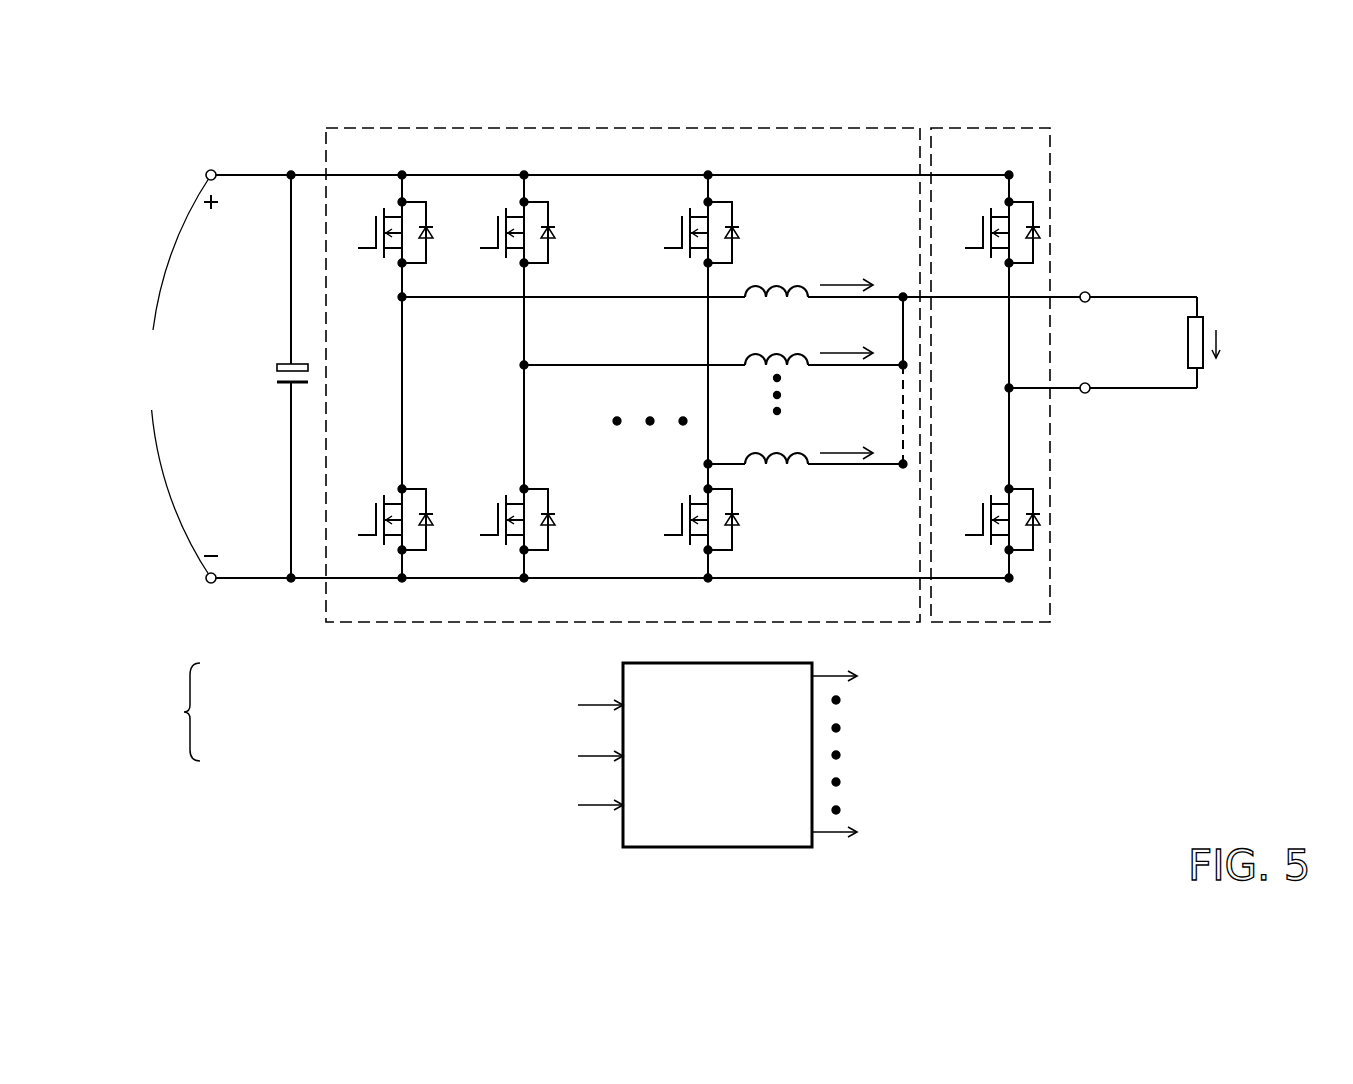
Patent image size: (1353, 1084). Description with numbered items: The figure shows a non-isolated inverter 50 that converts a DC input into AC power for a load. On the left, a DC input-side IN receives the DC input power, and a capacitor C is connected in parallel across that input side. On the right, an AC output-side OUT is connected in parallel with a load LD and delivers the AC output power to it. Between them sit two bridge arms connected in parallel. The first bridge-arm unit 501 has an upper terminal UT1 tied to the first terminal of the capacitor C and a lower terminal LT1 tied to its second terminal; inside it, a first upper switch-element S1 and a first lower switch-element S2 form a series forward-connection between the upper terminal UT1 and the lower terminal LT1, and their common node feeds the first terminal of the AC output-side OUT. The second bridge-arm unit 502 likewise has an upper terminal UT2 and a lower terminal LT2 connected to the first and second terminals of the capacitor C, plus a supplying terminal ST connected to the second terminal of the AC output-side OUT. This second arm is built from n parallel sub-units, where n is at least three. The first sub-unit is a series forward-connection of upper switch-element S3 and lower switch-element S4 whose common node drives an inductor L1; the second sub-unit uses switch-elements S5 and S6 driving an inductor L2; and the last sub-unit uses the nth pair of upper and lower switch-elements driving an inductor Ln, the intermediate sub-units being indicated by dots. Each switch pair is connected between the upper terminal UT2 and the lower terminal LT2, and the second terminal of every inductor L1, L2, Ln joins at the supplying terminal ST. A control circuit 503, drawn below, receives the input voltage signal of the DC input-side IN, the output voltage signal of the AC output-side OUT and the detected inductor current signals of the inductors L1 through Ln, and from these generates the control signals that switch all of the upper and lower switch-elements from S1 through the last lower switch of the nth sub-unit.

The non-isolated inverter 50 is at (1180, 710).
The first bridge-arm unit 501 is at (988, 128).
The second bridge-arm unit 502 is at (677, 128).
The control circuit 503 is at (725, 847).
The DC input-side IN is at (179, 376).
The AC output-side OUT is at (1085, 303).
The capacitor C is at (278, 376).
The load LD is at (1203, 317).
The supplying terminal ST is at (903, 297).
The upper terminal of the first bridge-arm unit UT1 is at (1009, 175).
The lower terminal of the first bridge-arm unit LT1 is at (1009, 578).
The upper terminal of the second bridge-arm unit UT2 is at (708, 175).
The lower terminal of the second bridge-arm unit LT2 is at (708, 578).
The first upper switch-element S1 is at (992, 232).
The first lower switch-element S2 is at (992, 519).
The upper switch-element S3 is at (388, 232).
The lower switch-element S4 is at (388, 519).
The upper switch-element S5 is at (507, 232).
The lower switch-element S6 is at (507, 519).
The inductor L1 is at (650, 276).
The inductor L2 is at (711, 344).
The inductor Ln is at (803, 444).